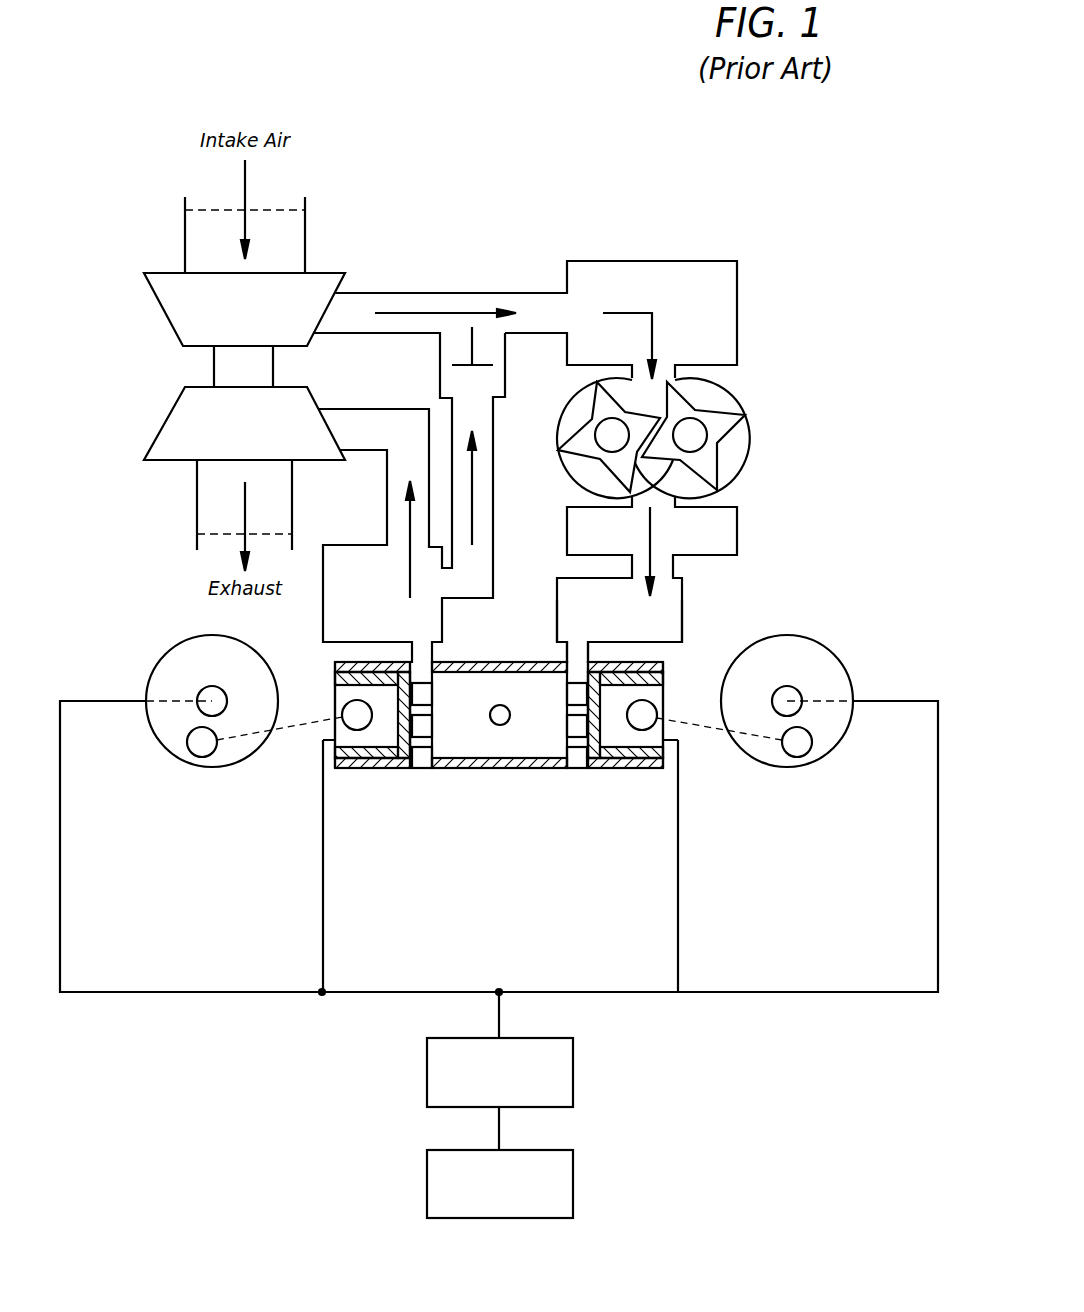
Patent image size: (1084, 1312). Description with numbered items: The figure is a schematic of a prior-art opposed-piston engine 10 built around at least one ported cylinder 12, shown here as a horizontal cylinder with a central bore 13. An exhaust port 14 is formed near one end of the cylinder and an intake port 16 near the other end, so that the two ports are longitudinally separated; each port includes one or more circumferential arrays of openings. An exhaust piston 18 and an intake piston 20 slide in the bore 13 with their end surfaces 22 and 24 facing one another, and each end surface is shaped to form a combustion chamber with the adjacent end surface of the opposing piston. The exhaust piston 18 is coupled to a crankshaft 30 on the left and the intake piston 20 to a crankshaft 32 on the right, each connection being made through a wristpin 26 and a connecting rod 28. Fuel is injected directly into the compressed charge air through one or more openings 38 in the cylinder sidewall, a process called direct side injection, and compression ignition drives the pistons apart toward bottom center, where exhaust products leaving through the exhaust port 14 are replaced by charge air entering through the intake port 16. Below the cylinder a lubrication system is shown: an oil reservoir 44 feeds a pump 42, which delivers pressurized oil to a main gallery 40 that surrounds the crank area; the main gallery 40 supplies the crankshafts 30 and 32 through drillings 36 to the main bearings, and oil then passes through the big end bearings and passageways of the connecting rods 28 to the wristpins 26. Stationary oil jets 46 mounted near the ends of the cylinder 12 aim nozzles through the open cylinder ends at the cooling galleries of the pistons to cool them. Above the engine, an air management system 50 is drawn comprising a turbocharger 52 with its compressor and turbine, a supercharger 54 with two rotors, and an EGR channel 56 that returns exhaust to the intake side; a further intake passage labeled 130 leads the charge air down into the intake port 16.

The opposed-piston engine 10 is at (793, 600).
The ported cylinder 12 is at (468, 663).
The bore 13 is at (520, 747).
The exhaust port 14 is at (422, 790).
The intake port 16 is at (577, 790).
The exhaust piston 18 is at (335, 678).
The intake piston 20 is at (665, 678).
The end surface of exhaust piston 22 is at (423, 680).
The end surface of intake piston 24 is at (575, 680).
The wristpin 26 is at (353, 712).
The connecting rod 28 is at (260, 733).
The crankshaft 30 is at (210, 768).
The crankshaft 32 is at (787, 768).
The drillings 36 is at (175, 702).
The openings 38 is at (502, 703).
The main gallery 40 is at (237, 993).
The pump 42 is at (573, 1072).
The oil reservoir 44 is at (573, 1183).
The oil jet 46 is at (333, 722).
The air management system 50 is at (472, 163).
The turbocharger 52 is at (160, 365).
The supercharger 54 is at (730, 390).
The EGR channel 56 is at (495, 435).
The intake channel 130 is at (683, 618).